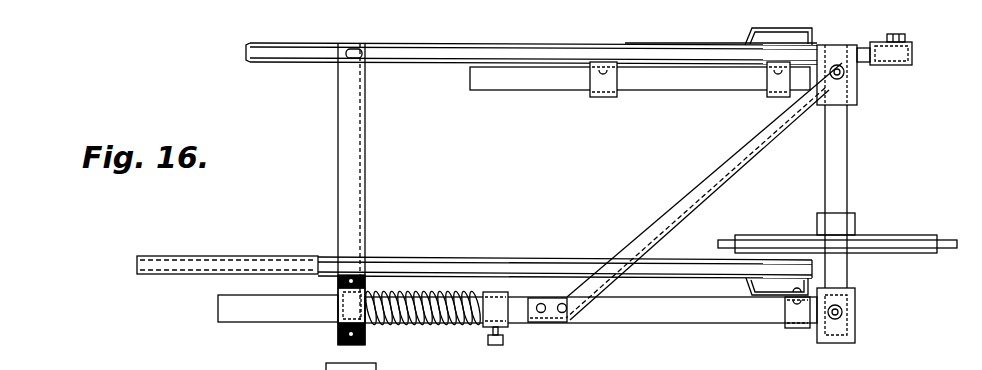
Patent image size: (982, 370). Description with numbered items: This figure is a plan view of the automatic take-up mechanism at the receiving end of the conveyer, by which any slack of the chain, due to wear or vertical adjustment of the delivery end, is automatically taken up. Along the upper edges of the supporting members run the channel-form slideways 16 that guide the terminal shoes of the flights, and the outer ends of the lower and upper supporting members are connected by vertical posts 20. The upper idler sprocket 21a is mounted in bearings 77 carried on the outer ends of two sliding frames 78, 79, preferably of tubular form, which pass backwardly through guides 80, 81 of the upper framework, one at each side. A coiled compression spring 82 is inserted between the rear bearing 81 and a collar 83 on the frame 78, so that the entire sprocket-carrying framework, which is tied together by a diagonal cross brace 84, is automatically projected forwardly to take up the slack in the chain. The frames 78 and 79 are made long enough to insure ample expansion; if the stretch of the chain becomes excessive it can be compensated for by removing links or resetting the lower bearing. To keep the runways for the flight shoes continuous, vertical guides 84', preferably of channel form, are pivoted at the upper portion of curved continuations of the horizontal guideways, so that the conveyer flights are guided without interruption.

The slideways of channel form 16 is at (443, 53).
The vertical posts 20 is at (745, 35).
The upper idler sprocket 21a is at (908, 240).
The bearings 77 is at (850, 90).
The sliding frame 78 is at (661, 310).
The sliding frame 79 is at (670, 82).
The guides 80 is at (598, 78).
The rear bearing 81 is at (350, 305).
The coiled compression spring 82 is at (428, 325).
The collar 83 is at (500, 312).
The diagonal cross brace 84 is at (704, 191).
The vertical guides 84' is at (907, 59).